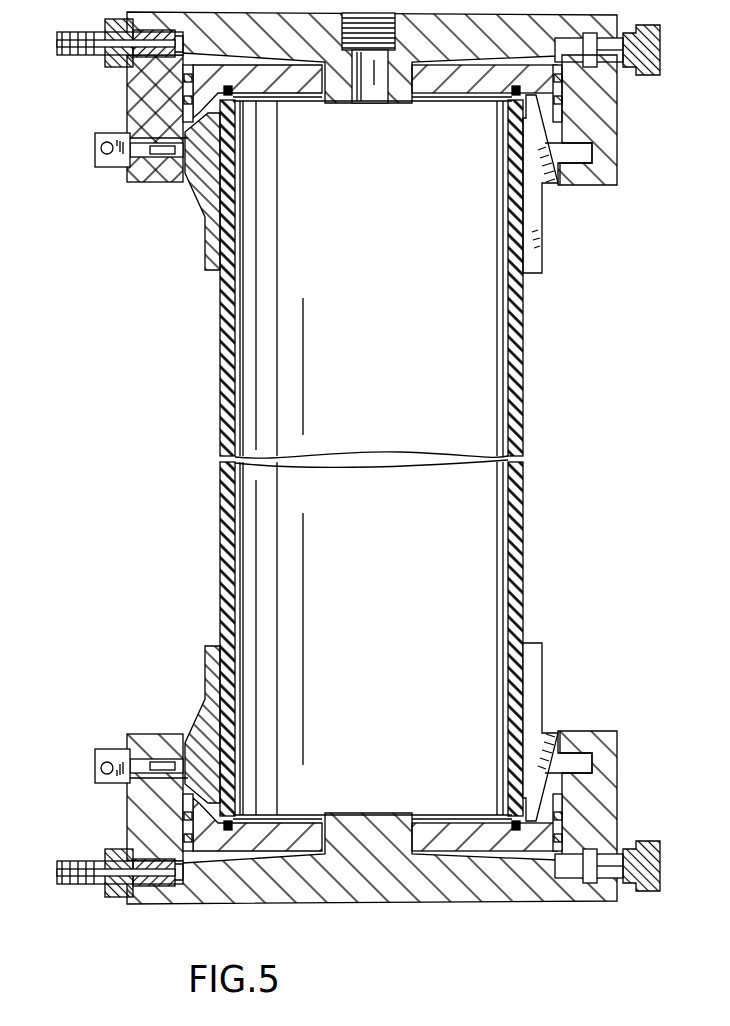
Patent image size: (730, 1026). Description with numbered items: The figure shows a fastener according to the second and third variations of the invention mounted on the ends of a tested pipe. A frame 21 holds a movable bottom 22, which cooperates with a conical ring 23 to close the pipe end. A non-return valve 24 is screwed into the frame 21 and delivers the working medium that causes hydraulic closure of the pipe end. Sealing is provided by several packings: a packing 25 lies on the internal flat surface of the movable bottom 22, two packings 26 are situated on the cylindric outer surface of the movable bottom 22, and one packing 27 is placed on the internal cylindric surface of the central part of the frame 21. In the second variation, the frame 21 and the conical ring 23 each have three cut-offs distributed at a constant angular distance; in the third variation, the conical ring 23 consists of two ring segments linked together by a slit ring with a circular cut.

The frame 21 is at (135, 95).
The movable bottom 22 is at (558, 183).
The conical ring 23 is at (217, 222).
The non-return valve 24 is at (57, 42).
The packing 25 is at (532, 123).
The packings 26 is at (323, 90).
The packing 27 is at (212, 198).